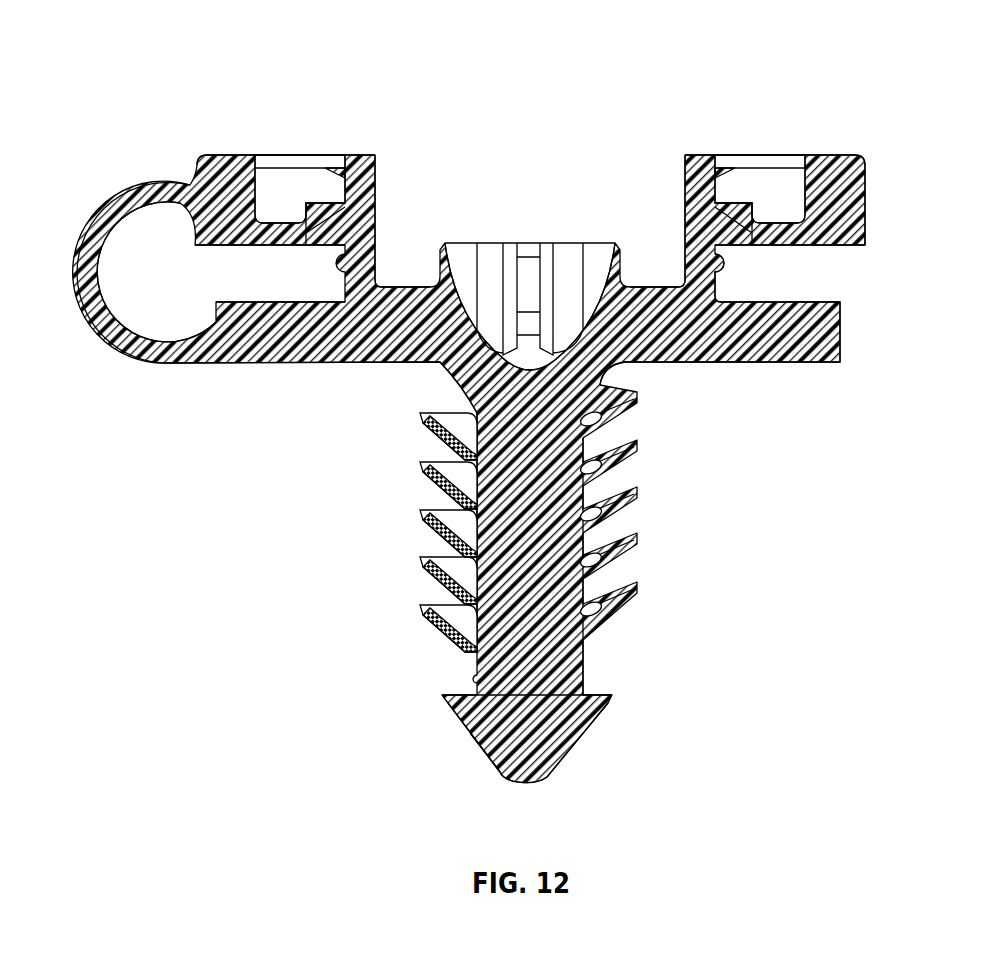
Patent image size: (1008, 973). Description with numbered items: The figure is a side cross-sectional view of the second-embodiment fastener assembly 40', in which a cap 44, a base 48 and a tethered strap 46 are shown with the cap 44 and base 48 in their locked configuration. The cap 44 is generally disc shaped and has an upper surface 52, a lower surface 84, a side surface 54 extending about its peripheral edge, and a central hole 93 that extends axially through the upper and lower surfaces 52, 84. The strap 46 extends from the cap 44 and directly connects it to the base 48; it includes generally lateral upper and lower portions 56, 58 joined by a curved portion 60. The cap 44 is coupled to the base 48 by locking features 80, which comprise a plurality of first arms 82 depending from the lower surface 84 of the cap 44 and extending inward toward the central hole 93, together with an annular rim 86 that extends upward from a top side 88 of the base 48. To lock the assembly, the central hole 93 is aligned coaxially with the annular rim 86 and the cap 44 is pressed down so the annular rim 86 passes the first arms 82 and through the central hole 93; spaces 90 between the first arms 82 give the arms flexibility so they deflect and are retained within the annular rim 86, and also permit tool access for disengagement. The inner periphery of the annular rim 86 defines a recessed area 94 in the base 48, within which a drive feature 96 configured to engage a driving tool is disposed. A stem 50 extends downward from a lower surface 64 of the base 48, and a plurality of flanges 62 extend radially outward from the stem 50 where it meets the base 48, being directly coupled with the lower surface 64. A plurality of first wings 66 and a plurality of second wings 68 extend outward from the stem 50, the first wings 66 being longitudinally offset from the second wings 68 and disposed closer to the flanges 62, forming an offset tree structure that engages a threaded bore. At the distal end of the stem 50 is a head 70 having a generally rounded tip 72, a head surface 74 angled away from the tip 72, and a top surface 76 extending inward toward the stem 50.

The fastener assembly 40' is at (463, 429).
The cap 44 is at (857, 180).
The tethered strap 46 is at (92, 313).
The base 48 is at (822, 338).
The stem 50 is at (467, 472).
The upper surface 52 is at (220, 155).
The side surface 54 is at (866, 210).
The upper portion 56 is at (120, 200).
The lower portion 58 is at (118, 353).
The curved portion 60 is at (80, 282).
The flanges 62 is at (445, 375).
The lower surface 64 is at (262, 362).
The first wings 66 is at (640, 587).
The second wings 68 is at (420, 610).
The head 70 is at (500, 738).
The tip 72 is at (520, 780).
The head surface 74 is at (487, 762).
The top surface 76 is at (612, 698).
The locking features 80 is at (735, 213).
The first arms 82 is at (752, 212).
The lower surface 84 is at (827, 246).
The annular rim 86 is at (728, 170).
The top side 88 is at (722, 300).
The spaces 90 is at (332, 250).
The central hole 93 is at (322, 191).
The recessed area 94 is at (393, 178).
The drive feature 96 is at (455, 250).